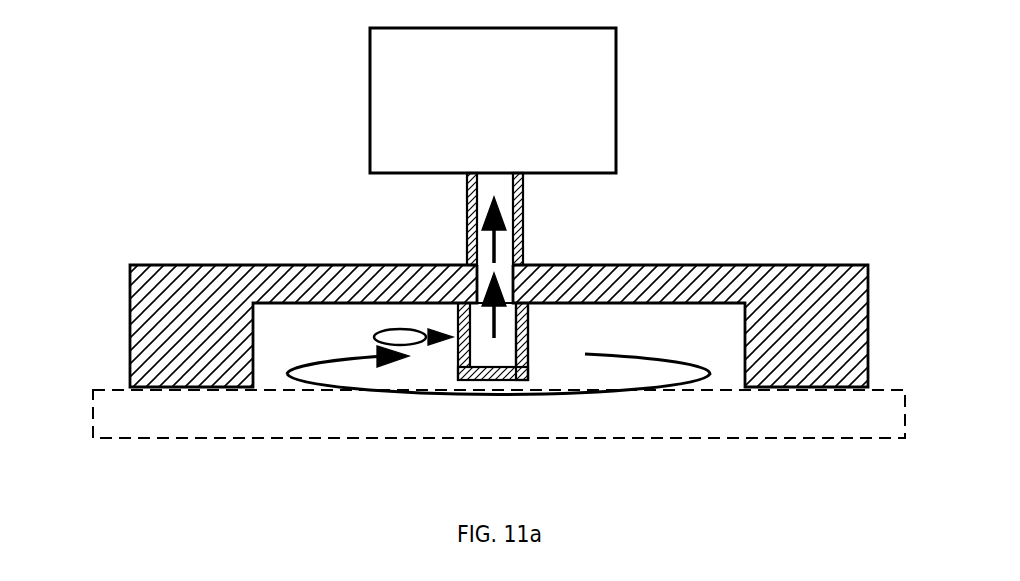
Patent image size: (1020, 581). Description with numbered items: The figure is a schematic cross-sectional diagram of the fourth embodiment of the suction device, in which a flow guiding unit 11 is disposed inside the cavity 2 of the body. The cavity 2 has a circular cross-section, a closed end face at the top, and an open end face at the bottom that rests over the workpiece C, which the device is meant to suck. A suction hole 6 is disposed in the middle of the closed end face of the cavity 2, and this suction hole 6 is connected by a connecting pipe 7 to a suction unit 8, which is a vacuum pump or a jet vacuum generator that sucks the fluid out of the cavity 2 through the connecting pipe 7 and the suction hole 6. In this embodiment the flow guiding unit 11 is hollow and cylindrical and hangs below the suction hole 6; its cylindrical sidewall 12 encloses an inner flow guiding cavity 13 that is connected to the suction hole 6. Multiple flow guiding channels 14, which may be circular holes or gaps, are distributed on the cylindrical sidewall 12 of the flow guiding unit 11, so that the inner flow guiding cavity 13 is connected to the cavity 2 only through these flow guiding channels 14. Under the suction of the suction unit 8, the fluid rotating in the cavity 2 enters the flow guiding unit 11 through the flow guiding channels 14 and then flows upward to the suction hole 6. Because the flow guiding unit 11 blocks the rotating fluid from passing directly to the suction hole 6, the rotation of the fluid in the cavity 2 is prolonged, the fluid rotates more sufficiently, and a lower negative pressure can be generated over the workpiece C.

The suction unit 8 is at (397, 58).
The connecting pipe 7 is at (484, 196).
The suction hole 6 is at (507, 287).
The cavity 2 is at (668, 322).
The nozzle tube 12 is at (458, 320).
The flow guiding channel 14 is at (528, 310).
The flow guiding unit 11 is at (467, 385).
The inner flow guiding cavity 13 is at (504, 358).
The workpiece C is at (788, 415).